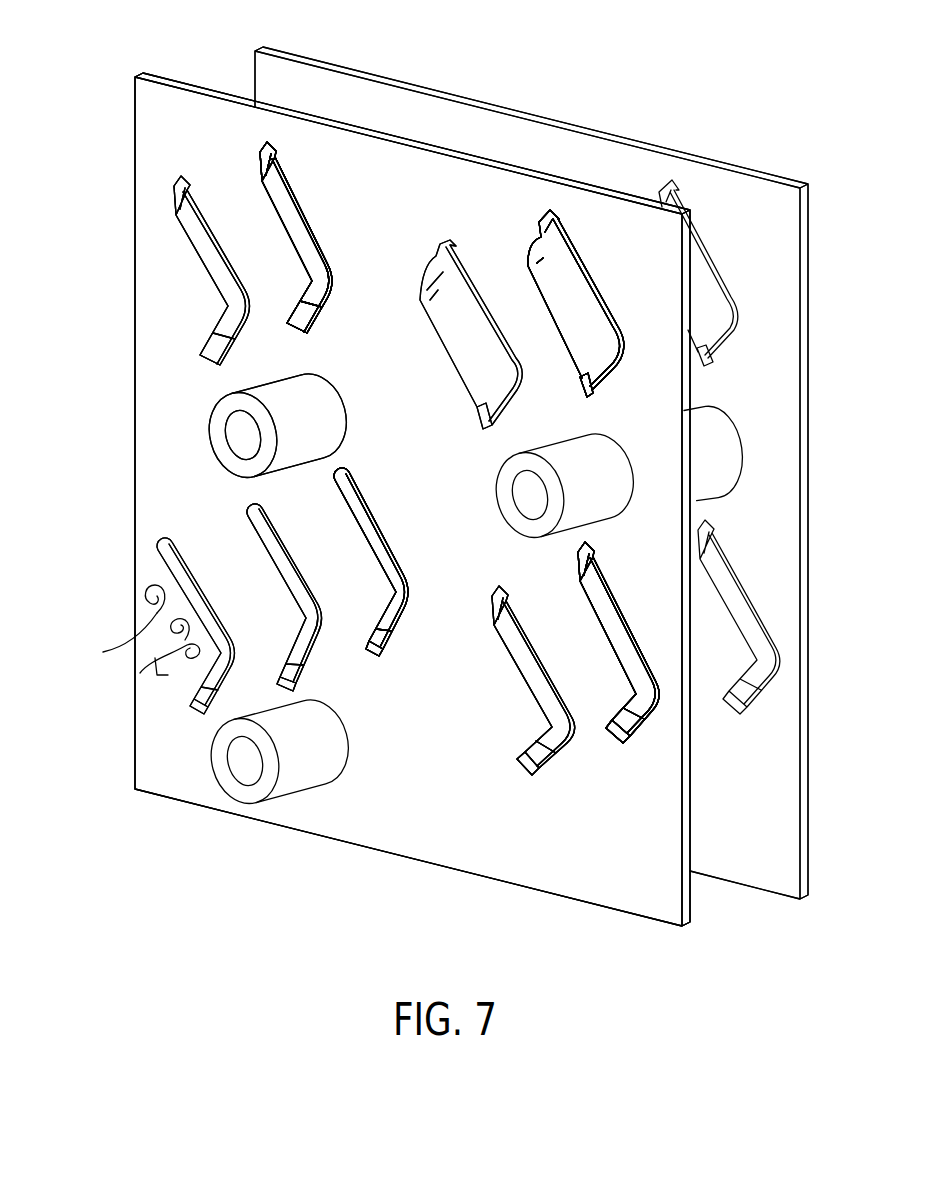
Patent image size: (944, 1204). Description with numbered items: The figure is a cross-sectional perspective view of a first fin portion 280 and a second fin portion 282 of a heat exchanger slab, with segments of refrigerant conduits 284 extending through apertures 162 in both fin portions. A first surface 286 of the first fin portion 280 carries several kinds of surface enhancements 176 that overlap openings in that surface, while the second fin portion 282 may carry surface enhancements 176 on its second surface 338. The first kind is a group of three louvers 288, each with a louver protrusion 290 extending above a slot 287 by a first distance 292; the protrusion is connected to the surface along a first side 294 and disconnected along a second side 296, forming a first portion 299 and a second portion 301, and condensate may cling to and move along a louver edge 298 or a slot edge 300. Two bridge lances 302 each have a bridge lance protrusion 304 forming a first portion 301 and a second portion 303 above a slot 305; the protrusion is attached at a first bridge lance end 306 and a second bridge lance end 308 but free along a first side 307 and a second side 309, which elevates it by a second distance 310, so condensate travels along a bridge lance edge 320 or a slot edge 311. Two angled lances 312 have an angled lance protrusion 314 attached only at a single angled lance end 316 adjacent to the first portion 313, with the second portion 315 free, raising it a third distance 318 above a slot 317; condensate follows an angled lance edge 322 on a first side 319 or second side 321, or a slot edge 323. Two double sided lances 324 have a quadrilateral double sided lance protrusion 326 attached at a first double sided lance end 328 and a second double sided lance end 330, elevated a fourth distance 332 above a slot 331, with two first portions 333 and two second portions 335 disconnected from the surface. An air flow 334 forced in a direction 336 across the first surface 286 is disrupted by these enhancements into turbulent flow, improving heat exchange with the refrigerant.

The apertures 162 is at (337, 400).
The surface enhancements 176 is at (180, 251).
The first fin portion 280 is at (133, 152).
The second fin portion 282 is at (806, 210).
The conduits 284 is at (232, 403).
The first surface 286 is at (158, 128).
The slot 287 is at (367, 515).
The louvers 288 is at (210, 724).
The louver protrusion 290 is at (337, 480).
The first distance 292 is at (360, 595).
The first side 294 is at (352, 557).
The second side 296 is at (418, 555).
The louver edge 298 is at (378, 655).
The first portion 299 is at (270, 554).
The slot edge 300 is at (403, 630).
The first portion 301 is at (291, 207).
The bridge lance 302 is at (215, 150).
The second portion 303 is at (326, 302).
The bridge lance protrusion 304 is at (230, 318).
The slot 305 is at (318, 222).
The first bridge lance end 306 is at (266, 148).
The first side 307 is at (300, 249).
The second bridge lance end 308 is at (336, 279).
The second side 309 is at (300, 172).
The second distance 310 is at (352, 277).
The slot edge 311 is at (238, 352).
The angled lance 312 is at (568, 812).
The first portion 313 is at (603, 617).
The angled lance protrusion 314 is at (527, 772).
The second portion 315 is at (623, 735).
The angled lance end 316 is at (590, 552).
The slot 317 is at (553, 688).
The third distance 318 is at (670, 690).
The first side 319 is at (647, 687).
The bridge lance edge 320 is at (340, 303).
The second side 321 is at (639, 617).
The angled lance edge 322 is at (648, 718).
The slot edge 323 is at (577, 733).
The double sided lances 324 is at (543, 413).
The double sided lance protrusion 326 is at (435, 283).
The first double sided lance end 328 is at (549, 205).
The second double sided lance end 330 is at (586, 398).
The slot 331 is at (582, 262).
The fourth distance 332 is at (634, 348).
The first portions 333 is at (585, 305).
The air flow 334 is at (153, 587).
The second portions 335 is at (555, 277).
The direction 336 is at (102, 678).
The second surface 338 is at (765, 257).